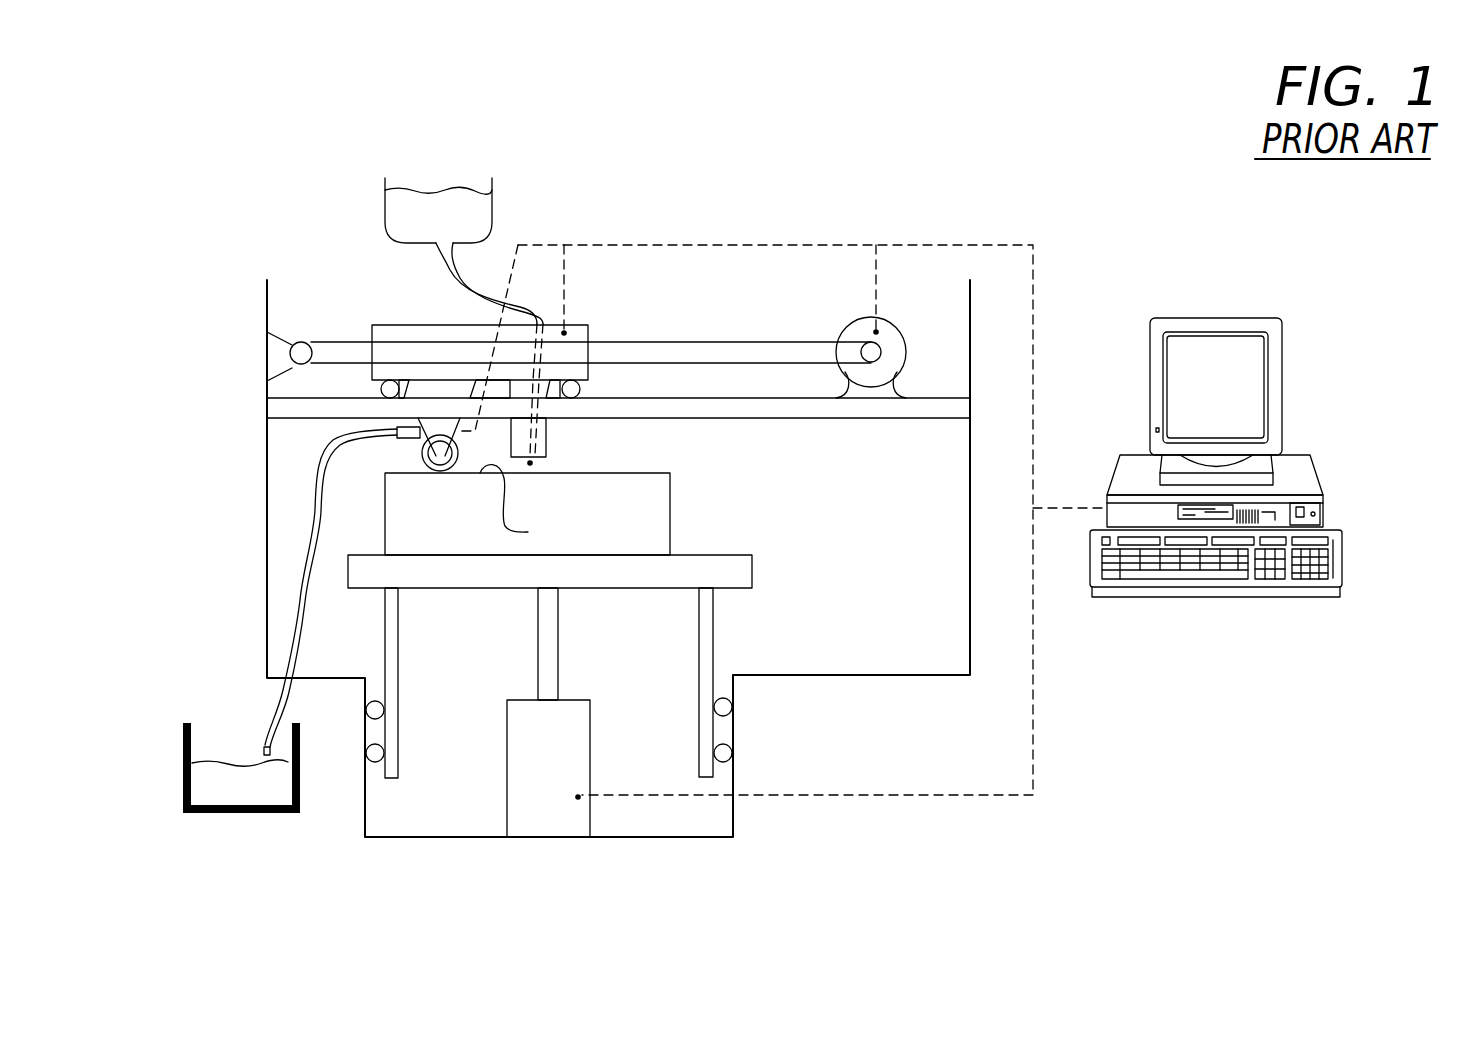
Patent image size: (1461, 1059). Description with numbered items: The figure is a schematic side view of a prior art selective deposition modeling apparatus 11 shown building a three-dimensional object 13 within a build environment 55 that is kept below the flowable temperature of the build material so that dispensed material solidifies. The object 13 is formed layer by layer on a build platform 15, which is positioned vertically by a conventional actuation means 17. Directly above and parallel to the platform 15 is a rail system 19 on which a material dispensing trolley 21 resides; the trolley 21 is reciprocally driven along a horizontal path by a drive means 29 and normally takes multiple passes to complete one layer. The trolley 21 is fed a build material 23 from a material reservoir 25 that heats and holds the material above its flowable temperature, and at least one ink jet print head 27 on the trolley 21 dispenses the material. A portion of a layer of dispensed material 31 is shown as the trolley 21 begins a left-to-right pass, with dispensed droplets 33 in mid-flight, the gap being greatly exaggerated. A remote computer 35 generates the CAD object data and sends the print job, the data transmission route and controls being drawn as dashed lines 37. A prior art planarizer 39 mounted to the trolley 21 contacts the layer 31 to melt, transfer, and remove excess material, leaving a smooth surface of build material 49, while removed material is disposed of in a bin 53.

The SDM apparatus 11 is at (222, 204).
The three-dimensional object 13 is at (706, 506).
The build platform 15 is at (752, 567).
The actuation means 17 is at (507, 772).
The rail system 19 is at (882, 418).
The material dispensing trolley 21 is at (421, 324).
The build material 23 is at (450, 203).
The material reservoir 25 is at (385, 197).
The ink jet print head 27 is at (546, 436).
The drive means 29 is at (850, 335).
The layer of dispensed material 31 is at (523, 509).
The dispensed droplets 33 is at (530, 463).
The remote computer 35 is at (1215, 597).
The data transmission route and controls 37 is at (625, 245).
The planarizer 39 is at (461, 447).
The smooth surface of build material 49 is at (414, 473).
The bin 53 is at (212, 790).
The build environment 55 is at (706, 462).